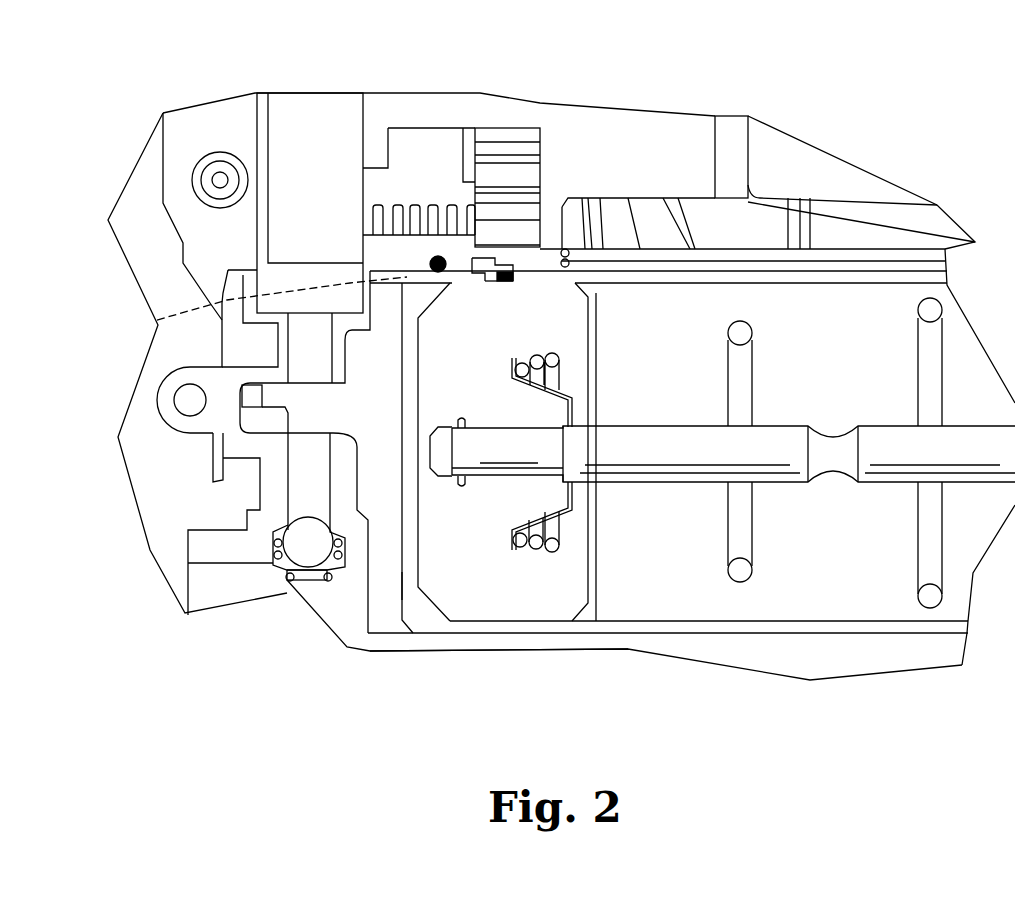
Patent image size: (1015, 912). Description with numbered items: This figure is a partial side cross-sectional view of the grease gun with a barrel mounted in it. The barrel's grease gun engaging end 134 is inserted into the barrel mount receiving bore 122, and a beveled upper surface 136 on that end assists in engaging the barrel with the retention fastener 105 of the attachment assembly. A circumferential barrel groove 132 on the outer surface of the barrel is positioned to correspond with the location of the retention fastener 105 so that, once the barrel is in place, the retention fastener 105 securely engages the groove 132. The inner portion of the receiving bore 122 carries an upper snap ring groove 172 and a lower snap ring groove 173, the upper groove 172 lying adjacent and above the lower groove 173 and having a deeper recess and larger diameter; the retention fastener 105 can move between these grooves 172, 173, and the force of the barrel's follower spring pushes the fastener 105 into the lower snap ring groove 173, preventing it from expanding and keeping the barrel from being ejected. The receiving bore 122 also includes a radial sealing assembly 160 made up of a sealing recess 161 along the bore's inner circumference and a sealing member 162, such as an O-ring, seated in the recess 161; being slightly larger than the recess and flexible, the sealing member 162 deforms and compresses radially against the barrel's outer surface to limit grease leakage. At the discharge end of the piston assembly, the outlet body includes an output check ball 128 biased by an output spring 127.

The retention fastener 105 is at (600, 337).
The barrel mount receiving bore 122 is at (402, 572).
The output spring 127 is at (322, 576).
The output check ball 128 is at (308, 550).
The barrel groove 132 is at (512, 283).
The grease gun engaging end 134 is at (428, 660).
The beveled upper surface 136 is at (160, 318).
The radial sealing assembly 160 is at (408, 262).
The sealing recess 161 is at (432, 257).
The sealing member 162 is at (503, 270).
The upper snap ring groove 172 is at (484, 257).
The lower snap ring groove 173 is at (512, 262).